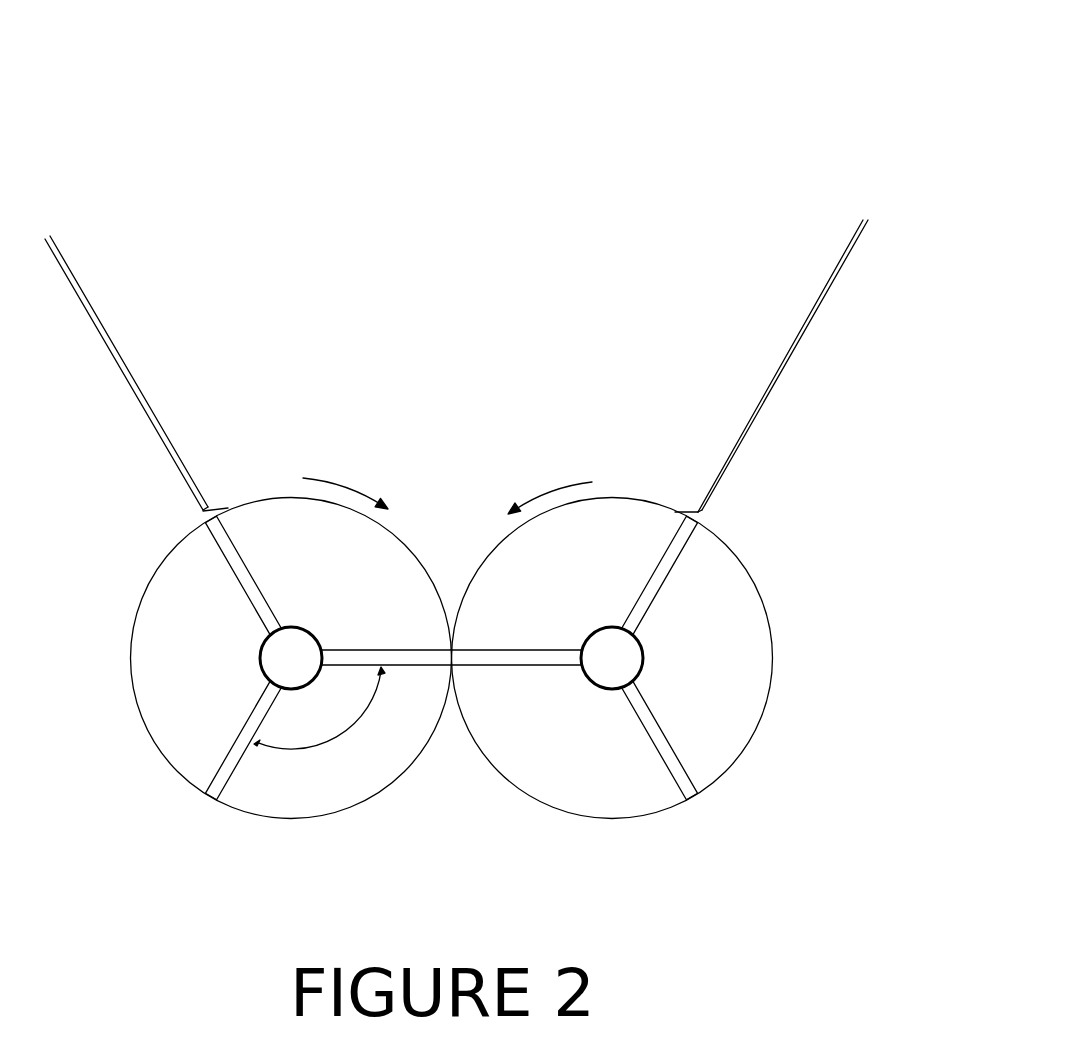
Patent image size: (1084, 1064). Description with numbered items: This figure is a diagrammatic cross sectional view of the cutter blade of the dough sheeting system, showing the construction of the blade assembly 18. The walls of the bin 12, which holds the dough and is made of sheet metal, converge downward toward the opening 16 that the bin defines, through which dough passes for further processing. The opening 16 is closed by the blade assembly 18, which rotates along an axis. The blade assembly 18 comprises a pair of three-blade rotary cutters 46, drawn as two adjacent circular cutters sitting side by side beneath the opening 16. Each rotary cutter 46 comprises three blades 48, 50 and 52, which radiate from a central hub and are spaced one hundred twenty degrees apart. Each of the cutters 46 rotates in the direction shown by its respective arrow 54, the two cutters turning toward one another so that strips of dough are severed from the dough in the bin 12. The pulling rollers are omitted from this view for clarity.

The bin 12 is at (803, 332).
The opening 16 is at (710, 487).
The blade assembly 18 is at (578, 258).
The three-blade rotary cutter 46 is at (183, 783).
The blade 48 is at (233, 777).
The blade 50 is at (247, 597).
The blade 52 is at (408, 665).
The arrow 54 is at (345, 480).